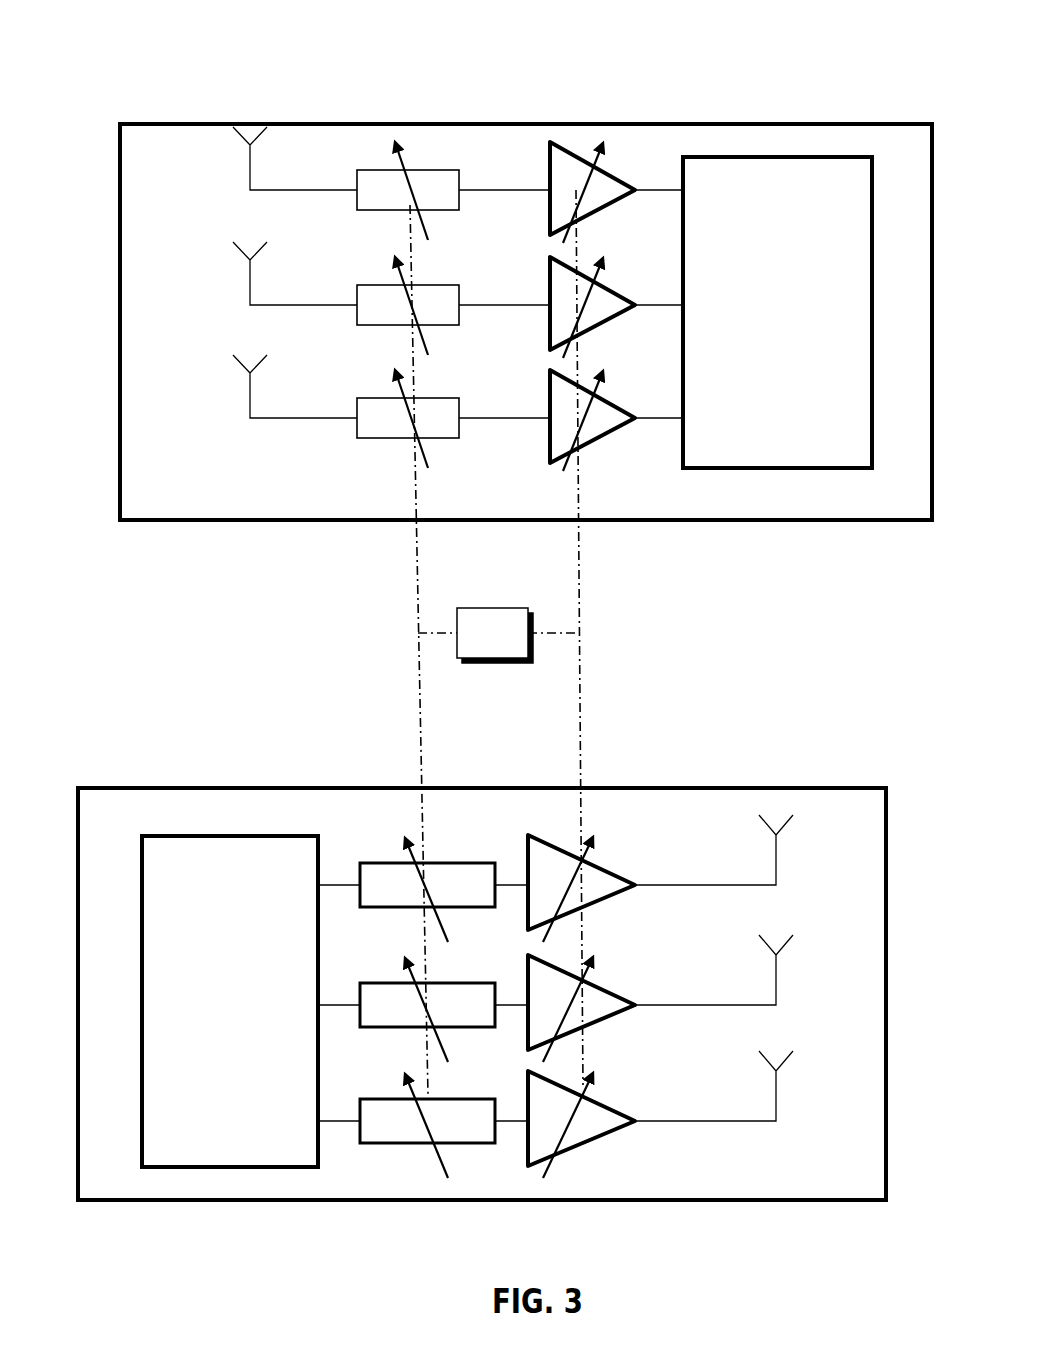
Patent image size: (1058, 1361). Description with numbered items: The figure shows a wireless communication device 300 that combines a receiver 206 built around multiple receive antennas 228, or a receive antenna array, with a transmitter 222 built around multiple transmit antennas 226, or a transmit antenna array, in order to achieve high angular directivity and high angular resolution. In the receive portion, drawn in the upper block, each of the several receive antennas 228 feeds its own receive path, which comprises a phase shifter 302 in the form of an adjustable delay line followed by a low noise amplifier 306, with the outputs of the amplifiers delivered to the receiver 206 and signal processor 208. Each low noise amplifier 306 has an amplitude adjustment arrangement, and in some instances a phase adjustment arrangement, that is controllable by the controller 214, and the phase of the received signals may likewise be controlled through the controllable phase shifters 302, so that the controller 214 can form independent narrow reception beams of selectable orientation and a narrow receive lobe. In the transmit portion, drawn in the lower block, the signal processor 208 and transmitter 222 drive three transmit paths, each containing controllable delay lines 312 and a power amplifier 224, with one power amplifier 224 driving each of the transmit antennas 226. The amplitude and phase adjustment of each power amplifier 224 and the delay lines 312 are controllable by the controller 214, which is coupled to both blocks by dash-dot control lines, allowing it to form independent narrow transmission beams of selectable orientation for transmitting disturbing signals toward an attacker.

The wireless communication device 300 is at (104, 97).
The receive antennas 228 is at (250, 107).
The phase shifter 302 is at (395, 153).
The low noise amplifier 306 is at (545, 167).
The receiver 206 is at (683, 160).
The signal processor 208 is at (505, 620).
The controller 214 is at (470, 651).
The transmitter 222 is at (232, 835).
The controllable delay lines 312 is at (392, 858).
The power amplifier 224 is at (568, 852).
The transmit antennas 226 is at (783, 802).